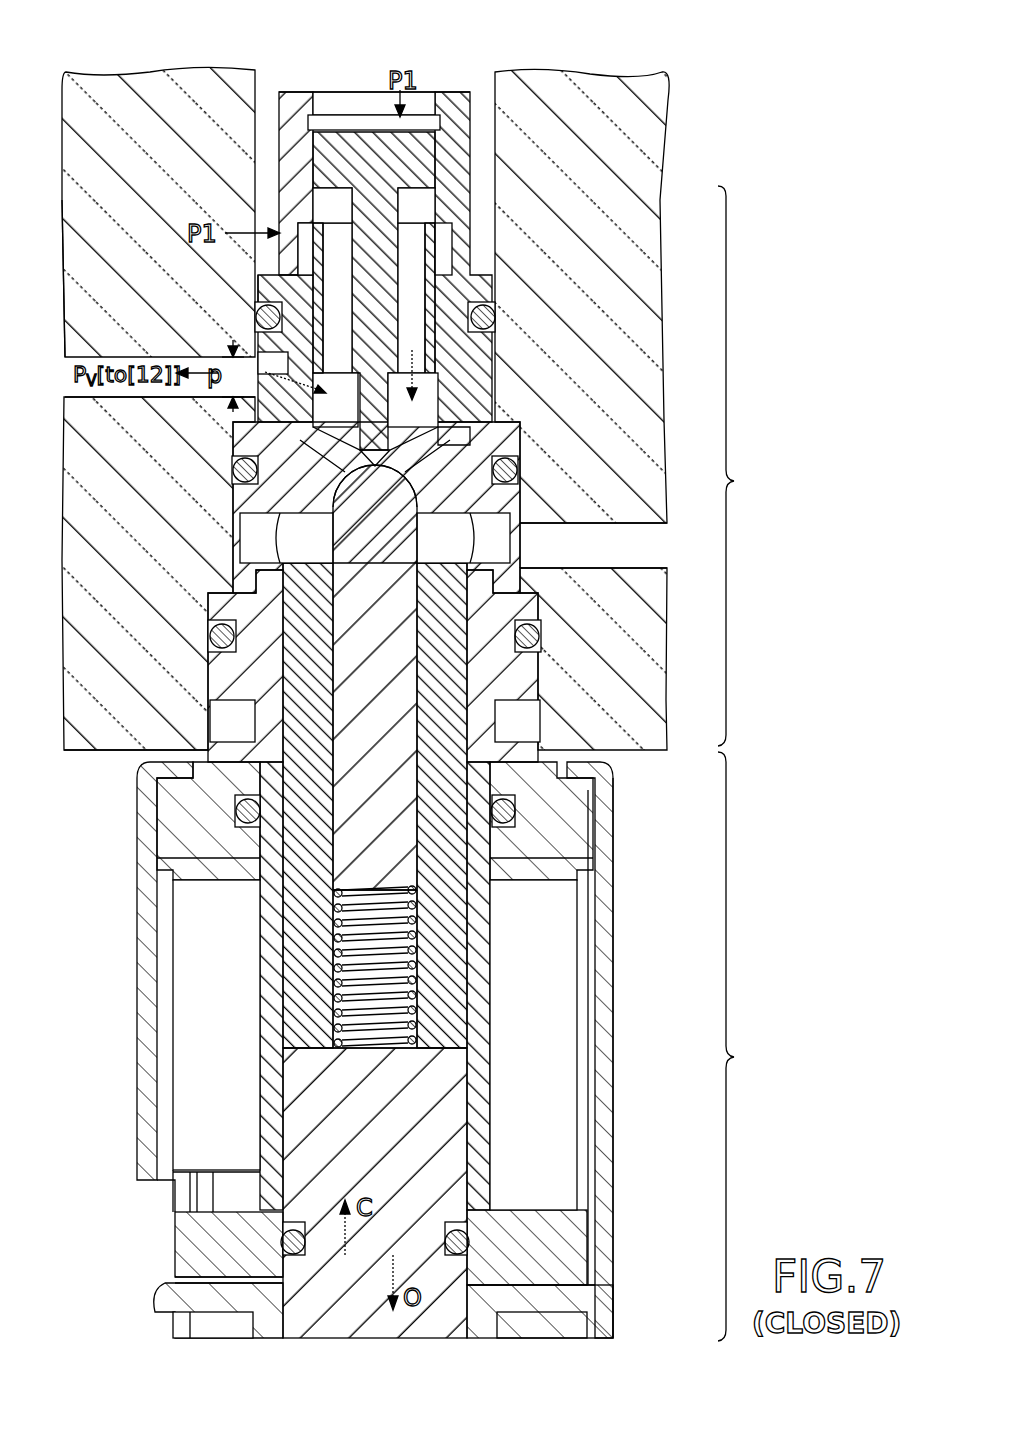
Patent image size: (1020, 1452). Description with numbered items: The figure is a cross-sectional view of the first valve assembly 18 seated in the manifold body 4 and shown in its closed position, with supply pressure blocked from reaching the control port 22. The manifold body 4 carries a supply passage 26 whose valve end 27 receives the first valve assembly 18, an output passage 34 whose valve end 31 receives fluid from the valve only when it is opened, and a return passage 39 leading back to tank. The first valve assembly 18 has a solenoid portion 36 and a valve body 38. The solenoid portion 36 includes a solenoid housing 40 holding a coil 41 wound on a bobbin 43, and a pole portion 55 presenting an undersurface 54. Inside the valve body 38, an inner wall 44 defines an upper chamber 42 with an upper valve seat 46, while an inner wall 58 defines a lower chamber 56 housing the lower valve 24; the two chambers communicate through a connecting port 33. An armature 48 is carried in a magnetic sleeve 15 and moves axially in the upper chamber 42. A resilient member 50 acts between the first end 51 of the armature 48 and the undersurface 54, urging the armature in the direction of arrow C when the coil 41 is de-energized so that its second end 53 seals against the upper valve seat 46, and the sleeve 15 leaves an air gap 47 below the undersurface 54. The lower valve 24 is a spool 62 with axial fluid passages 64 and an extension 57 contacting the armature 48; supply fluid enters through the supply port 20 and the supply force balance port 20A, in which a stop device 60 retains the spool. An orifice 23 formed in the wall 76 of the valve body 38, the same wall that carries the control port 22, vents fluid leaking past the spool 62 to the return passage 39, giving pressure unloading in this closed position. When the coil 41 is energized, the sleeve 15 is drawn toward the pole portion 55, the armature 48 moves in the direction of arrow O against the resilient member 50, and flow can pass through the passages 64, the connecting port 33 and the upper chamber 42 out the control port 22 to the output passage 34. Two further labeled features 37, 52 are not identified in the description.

The manifold body 4 is at (122, 752).
The magnetic sleeve 15 is at (288, 733).
The first valve assembly 18 is at (652, 1280).
The supply port 20 is at (300, 249).
The supply force balance port 20A is at (311, 97).
The control port 22 is at (266, 545).
The orifice 23 is at (302, 372).
The lower valve 24 is at (190, 293).
The supply passage 26 is at (292, 73).
The valve end 27 is at (500, 80).
The valve end 31 is at (523, 553).
The connecting port 33 is at (368, 452).
The output passage 34 is at (638, 547).
The solenoid portion 36 is at (744, 1046).
The outlet passage 37 is at (252, 380).
The valve body 38 is at (744, 466).
The return passage 39 is at (57, 356).
The solenoid housing 40 is at (140, 1052).
The coil 41 is at (195, 1118).
The upper chamber 42 is at (288, 528).
The bobbin 43 is at (183, 1235).
The inner wall 44 is at (452, 678).
The upper valve seat 46 is at (335, 503).
The air gap 47 is at (278, 1048).
The armature 48 is at (390, 784).
The resilient member 50 is at (352, 985).
The first end 51 is at (402, 897).
The guide tube 52 is at (332, 946).
The second end 53 is at (420, 428).
The undersurface 54 is at (452, 1045).
The pole portion 55 is at (290, 1323).
The lower chamber 56 is at (330, 209).
The extension 57 is at (396, 410).
The inner wall 58 is at (330, 293).
The stop device 60 is at (440, 123).
The spool 62 is at (408, 313).
The axial fluid passages 64 is at (415, 240).
The wall 76 is at (258, 318).